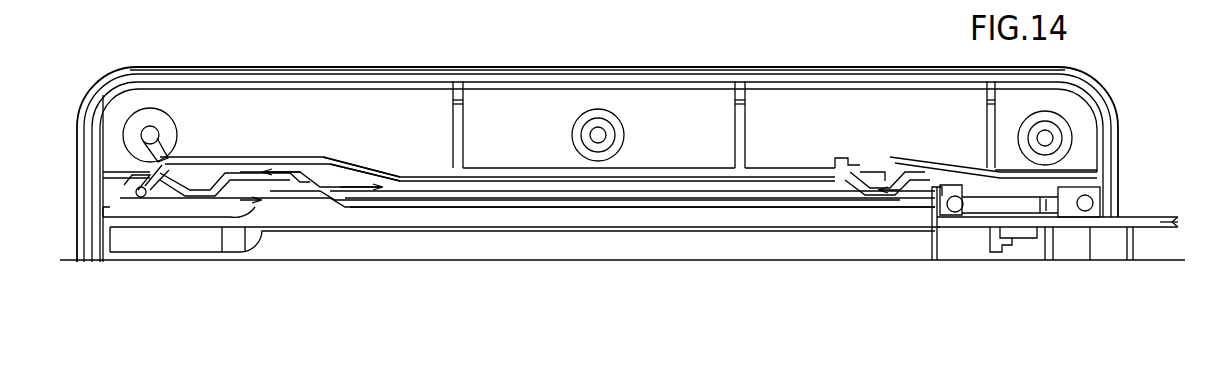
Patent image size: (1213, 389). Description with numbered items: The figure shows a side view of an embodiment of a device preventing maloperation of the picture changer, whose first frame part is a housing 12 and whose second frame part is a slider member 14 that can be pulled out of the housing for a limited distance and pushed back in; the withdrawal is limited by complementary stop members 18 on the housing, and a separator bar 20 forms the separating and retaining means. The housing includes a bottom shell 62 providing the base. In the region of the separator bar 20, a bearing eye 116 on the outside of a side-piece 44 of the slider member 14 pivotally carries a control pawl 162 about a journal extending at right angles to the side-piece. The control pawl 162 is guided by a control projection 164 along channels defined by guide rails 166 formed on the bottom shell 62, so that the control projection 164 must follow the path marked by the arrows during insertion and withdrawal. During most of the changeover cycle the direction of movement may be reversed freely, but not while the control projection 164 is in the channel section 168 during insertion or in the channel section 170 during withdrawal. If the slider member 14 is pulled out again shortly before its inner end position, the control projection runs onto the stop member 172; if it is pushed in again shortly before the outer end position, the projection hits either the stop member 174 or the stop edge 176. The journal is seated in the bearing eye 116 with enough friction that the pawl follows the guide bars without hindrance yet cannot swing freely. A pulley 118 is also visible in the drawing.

The housing 12 is at (291, 60).
The slider member 14 is at (1168, 212).
The complementary stop members 18 is at (1112, 200).
The separator bar 20 is at (1088, 240).
The side-piece 44 is at (1168, 226).
The bottom shell 62 is at (832, 66).
The bearing eye 116 is at (1100, 190).
The pulley 118 is at (616, 128).
The control pawl 162 is at (1055, 215).
The control projection 164 is at (955, 210).
The guide rails 166 is at (250, 180).
The channel section 168 is at (220, 162).
The channel section 170 is at (902, 172).
The stop member 172 is at (326, 170).
The stop member 174 is at (888, 188).
The stop edge 176 is at (840, 165).